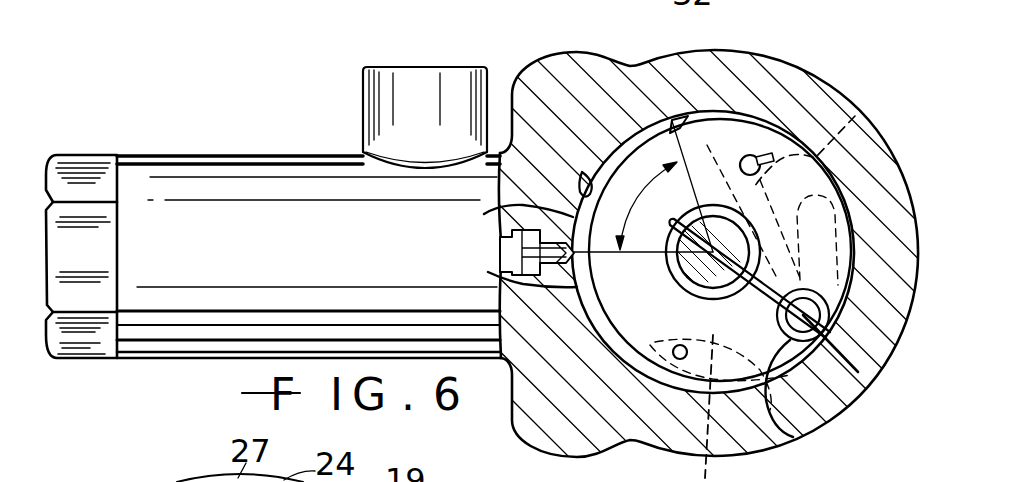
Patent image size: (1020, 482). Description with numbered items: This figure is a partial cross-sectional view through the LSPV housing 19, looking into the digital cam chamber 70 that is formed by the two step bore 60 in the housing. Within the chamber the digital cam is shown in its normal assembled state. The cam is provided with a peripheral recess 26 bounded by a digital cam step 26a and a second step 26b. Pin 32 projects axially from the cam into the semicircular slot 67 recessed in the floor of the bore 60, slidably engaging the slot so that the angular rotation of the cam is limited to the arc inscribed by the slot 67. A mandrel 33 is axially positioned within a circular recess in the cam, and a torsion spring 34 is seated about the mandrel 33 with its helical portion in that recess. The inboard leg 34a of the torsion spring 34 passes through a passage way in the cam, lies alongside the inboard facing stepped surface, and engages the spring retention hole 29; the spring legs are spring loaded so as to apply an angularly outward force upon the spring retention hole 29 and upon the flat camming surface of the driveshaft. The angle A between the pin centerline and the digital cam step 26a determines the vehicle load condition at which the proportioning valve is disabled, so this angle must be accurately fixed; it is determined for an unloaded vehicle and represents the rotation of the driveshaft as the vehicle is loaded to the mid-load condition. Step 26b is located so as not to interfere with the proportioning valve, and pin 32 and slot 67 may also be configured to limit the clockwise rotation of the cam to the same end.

The LSPV housing 19 is at (792, 63).
The peripheral recess 26 is at (507, 236).
The digital cam step 26a is at (672, 120).
The step 26b is at (503, 246).
The spring retention hole 29 is at (753, 156).
The pin 32 is at (673, 355).
The mandrel 33 is at (858, 372).
The torsion spring 34 is at (793, 437).
The inboard leg 34a is at (857, 113).
The two step bore 60 is at (582, 172).
The semicircular slot 67 is at (735, 408).
The digital cam chamber 70 is at (616, 160).
The angle A is at (646, 206).